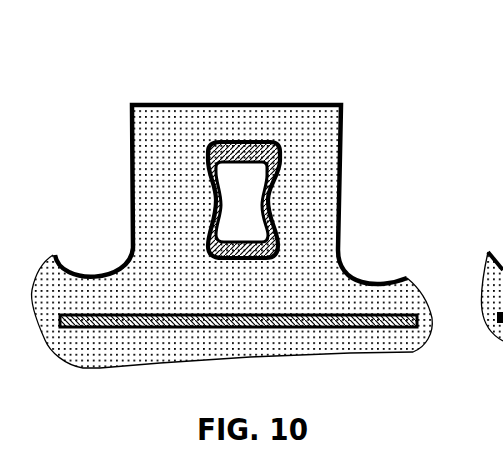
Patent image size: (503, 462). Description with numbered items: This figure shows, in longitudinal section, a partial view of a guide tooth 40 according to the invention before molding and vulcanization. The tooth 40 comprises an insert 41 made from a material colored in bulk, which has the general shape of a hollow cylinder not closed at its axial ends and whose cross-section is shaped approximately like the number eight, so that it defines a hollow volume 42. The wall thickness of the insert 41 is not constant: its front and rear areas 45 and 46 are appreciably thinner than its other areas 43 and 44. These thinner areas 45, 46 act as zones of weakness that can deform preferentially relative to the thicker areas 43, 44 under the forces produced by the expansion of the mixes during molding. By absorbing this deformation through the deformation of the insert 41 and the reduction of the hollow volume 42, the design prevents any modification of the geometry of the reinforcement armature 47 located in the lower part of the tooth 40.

The guide tooth 40 is at (307, 163).
The insert 41 is at (279, 142).
The hollow volume 42 is at (240, 187).
The other area of insert wall 43 is at (245, 142).
The other area of insert wall 44 is at (250, 260).
The front area 45 is at (213, 200).
The rear area 46 is at (270, 203).
The reinforcement armature 47 is at (200, 328).